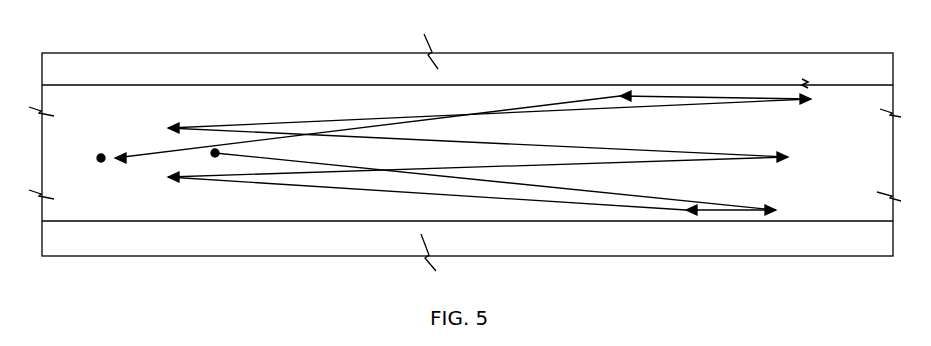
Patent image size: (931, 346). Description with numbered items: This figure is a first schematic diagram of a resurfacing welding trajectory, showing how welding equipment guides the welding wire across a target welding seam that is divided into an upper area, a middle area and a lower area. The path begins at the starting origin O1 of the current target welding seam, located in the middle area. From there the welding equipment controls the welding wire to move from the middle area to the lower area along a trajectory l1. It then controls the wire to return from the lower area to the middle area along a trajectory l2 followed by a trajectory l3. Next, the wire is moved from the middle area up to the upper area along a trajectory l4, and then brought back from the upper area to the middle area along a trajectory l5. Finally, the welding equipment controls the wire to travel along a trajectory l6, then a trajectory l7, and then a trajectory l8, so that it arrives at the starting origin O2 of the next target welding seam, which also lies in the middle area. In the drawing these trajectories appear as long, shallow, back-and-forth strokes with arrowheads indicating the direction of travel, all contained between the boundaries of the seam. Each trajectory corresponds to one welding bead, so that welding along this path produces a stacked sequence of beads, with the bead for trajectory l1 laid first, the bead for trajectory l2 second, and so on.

The trajectory l1 is at (495, 184).
The trajectory l2 is at (731, 223).
The trajectory l3 is at (427, 192).
The trajectory l4 is at (478, 166).
The trajectory l5 is at (715, 90).
The trajectory l6 is at (489, 117).
The trajectory l7 is at (478, 143).
The trajectory l8 is at (373, 129).
The starting origin of the current target welding seam O1 is at (202, 159).
The starting origin of the next target welding seam O2 is at (89, 167).